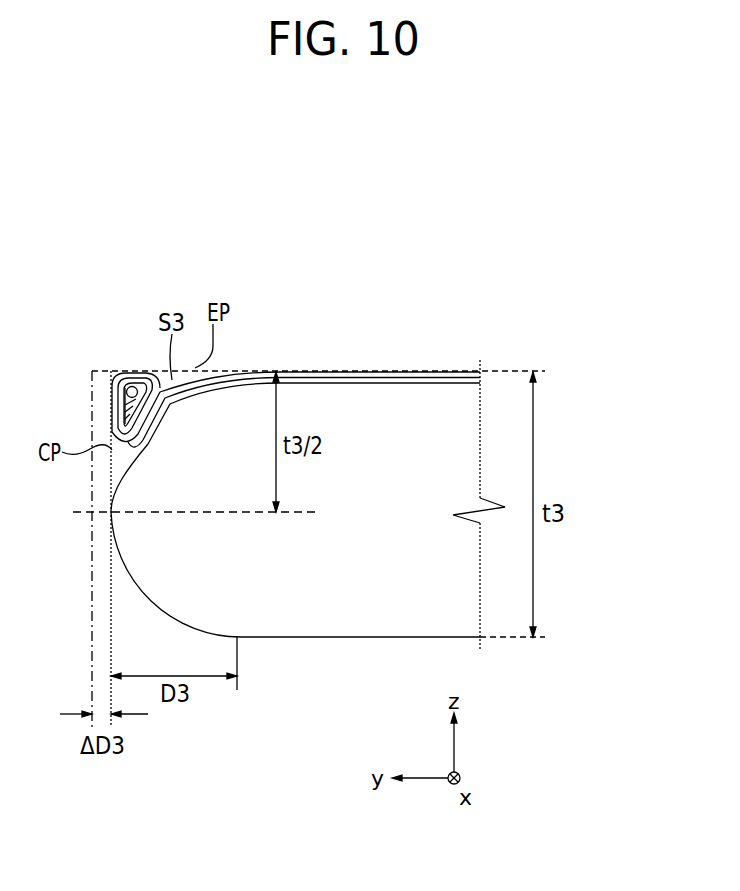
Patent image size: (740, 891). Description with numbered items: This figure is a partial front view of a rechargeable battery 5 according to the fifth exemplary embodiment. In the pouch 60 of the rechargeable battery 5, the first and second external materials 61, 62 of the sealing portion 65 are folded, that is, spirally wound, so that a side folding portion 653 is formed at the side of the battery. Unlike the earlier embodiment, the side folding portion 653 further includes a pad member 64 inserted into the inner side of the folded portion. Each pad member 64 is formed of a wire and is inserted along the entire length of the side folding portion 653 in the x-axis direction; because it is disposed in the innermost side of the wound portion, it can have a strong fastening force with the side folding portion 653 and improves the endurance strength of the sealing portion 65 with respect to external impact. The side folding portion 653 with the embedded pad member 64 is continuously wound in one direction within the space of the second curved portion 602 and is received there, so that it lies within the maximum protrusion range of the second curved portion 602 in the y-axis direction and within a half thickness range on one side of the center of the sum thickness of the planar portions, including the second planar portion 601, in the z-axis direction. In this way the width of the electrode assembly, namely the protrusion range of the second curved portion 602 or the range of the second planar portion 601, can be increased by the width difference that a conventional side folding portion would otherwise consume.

The rechargeable battery 5 is at (441, 267).
The pouch 60 is at (373, 301).
The first external material 61 is at (366, 382).
The second external material 62 is at (303, 371).
The pad member 64 is at (127, 392).
The sealing portion 65 is at (98, 363).
The side folding portion 653 is at (121, 376).
The second planar portion 601 is at (342, 615).
The second curved portion 602 is at (142, 593).